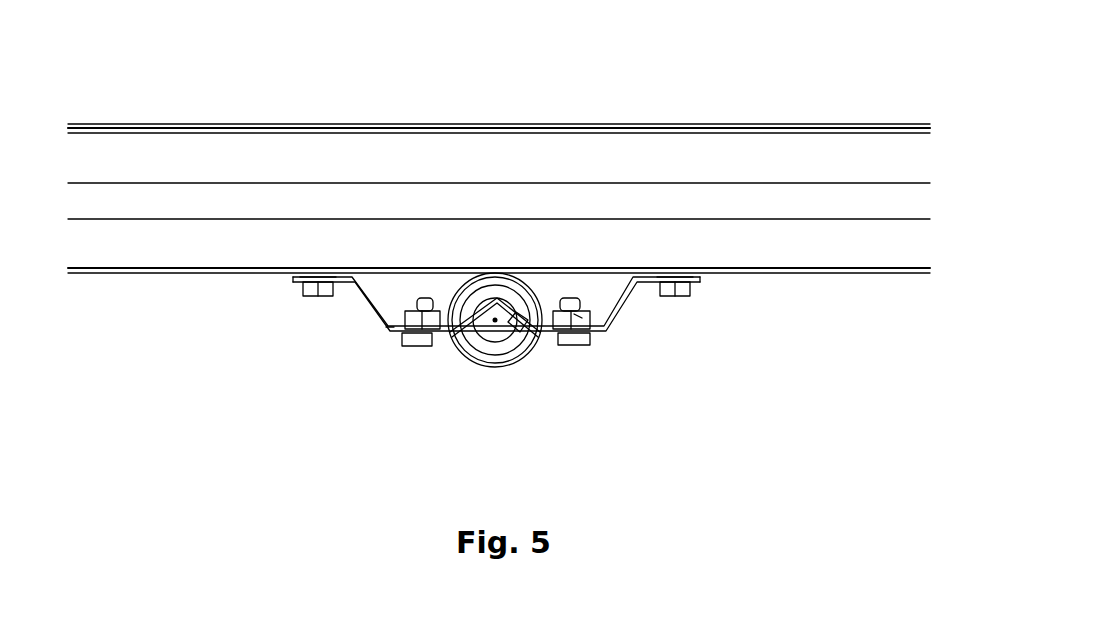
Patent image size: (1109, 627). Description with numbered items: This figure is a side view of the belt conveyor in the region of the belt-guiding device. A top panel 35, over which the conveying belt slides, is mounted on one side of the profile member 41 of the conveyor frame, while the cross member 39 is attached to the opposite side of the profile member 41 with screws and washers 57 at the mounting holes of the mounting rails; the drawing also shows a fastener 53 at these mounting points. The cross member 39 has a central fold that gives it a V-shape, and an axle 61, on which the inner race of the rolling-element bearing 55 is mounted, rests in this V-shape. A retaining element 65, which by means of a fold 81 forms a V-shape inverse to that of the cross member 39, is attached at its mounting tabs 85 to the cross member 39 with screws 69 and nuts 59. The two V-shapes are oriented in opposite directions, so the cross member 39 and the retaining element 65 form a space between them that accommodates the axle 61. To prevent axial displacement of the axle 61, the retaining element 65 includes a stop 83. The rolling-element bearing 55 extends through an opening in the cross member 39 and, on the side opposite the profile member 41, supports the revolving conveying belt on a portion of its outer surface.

The top panel 35 is at (543, 121).
The profile member 41 is at (293, 198).
The cross member 39 is at (618, 307).
The bolt 53 is at (305, 295).
The screws and washers 57 is at (297, 279).
The rolling-element bearing 55 is at (478, 290).
The retaining element 65 is at (470, 318).
The axle 61 is at (495, 322).
The stop 83 is at (518, 333).
The fold 81 is at (497, 300).
The screws 69 is at (408, 345).
The mounting tabs 85 is at (428, 347).
The nuts 59 is at (390, 327).